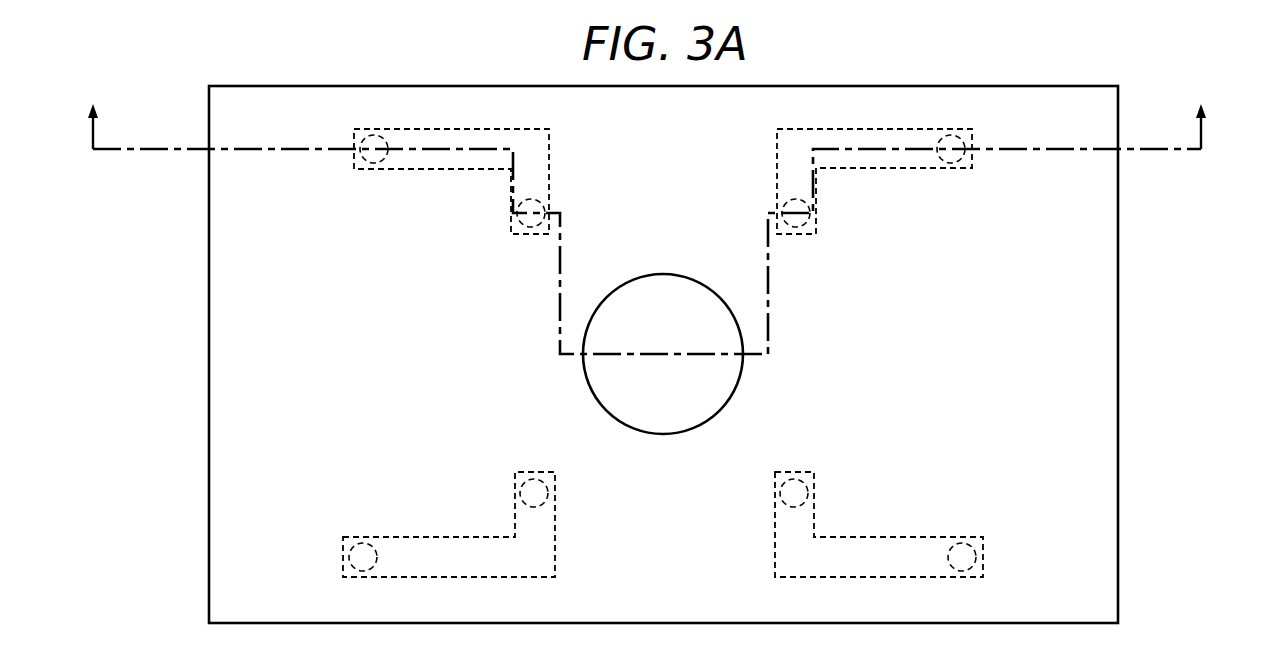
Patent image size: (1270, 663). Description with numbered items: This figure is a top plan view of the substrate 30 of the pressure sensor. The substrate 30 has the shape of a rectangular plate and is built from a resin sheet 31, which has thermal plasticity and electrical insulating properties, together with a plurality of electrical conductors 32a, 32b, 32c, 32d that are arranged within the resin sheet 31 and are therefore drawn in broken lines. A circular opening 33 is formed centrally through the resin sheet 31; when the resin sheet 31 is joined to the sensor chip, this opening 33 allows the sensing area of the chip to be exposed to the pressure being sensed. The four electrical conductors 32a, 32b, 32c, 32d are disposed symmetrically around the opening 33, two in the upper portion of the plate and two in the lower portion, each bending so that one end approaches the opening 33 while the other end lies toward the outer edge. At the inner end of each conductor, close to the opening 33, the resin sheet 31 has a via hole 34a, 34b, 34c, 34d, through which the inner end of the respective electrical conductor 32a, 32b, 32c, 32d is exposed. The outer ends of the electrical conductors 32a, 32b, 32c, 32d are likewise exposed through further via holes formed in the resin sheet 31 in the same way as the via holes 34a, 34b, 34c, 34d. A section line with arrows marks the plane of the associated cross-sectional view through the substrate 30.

The substrate 30 is at (649, 350).
The resin sheet 31 is at (1100, 268).
The electrical conductor 32a is at (456, 169).
The electrical conductor 32b is at (893, 169).
The electrical conductor 32c is at (456, 537).
The electrical conductor 32d is at (882, 537).
The opening 33 is at (730, 390).
The via hole 34a is at (540, 204).
The via hole 34b is at (787, 206).
The via hole 34c is at (543, 491).
The via hole 34d is at (790, 490).